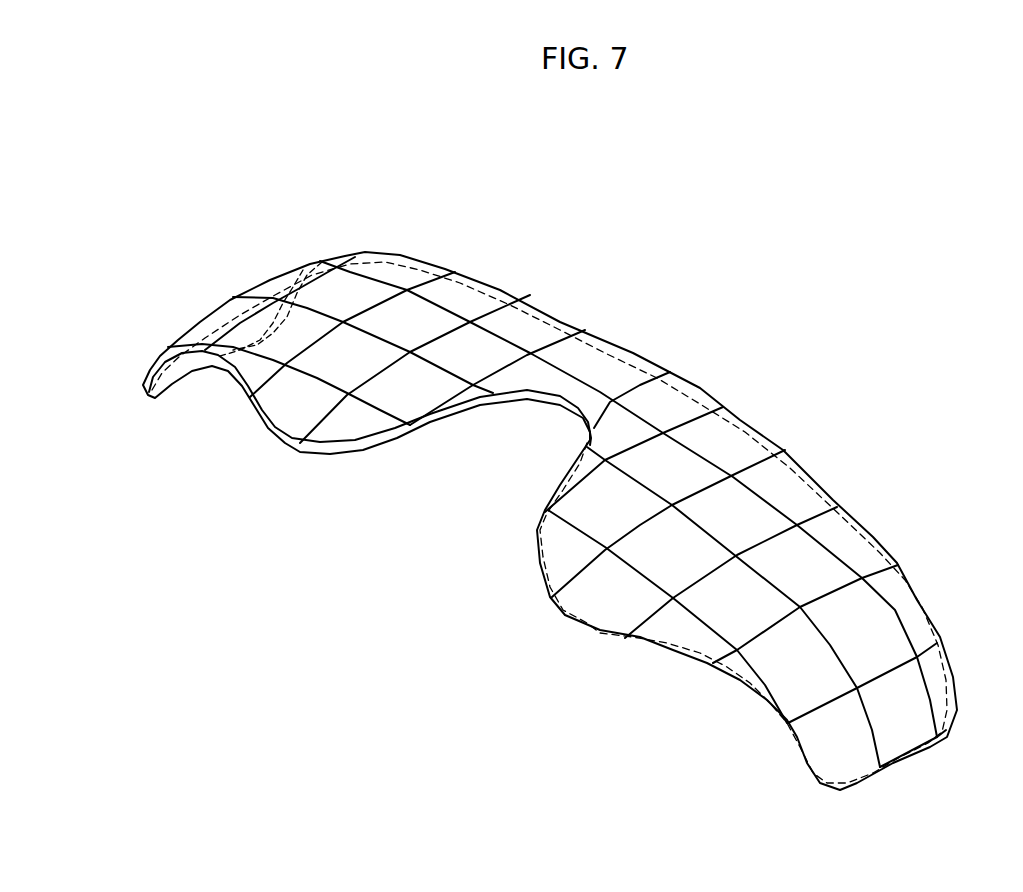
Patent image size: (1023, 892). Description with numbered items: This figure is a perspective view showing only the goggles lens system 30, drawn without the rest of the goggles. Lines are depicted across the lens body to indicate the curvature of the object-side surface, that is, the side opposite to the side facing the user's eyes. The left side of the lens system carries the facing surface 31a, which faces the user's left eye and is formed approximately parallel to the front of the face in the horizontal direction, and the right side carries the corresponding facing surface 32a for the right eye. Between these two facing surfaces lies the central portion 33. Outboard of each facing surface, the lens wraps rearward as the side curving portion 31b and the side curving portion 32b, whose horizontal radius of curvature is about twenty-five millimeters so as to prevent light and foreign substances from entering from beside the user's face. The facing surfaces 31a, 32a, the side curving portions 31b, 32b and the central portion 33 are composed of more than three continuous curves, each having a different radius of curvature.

The goggles lens system 30 is at (759, 314).
The facing surface of the left lens 31a is at (790, 490).
The side curving portion of the left lens 31b is at (887, 633).
The facing surface of the right lens 32a is at (417, 315).
The side curving portion of the right lens 32b is at (233, 296).
The central portion 33 is at (597, 365).